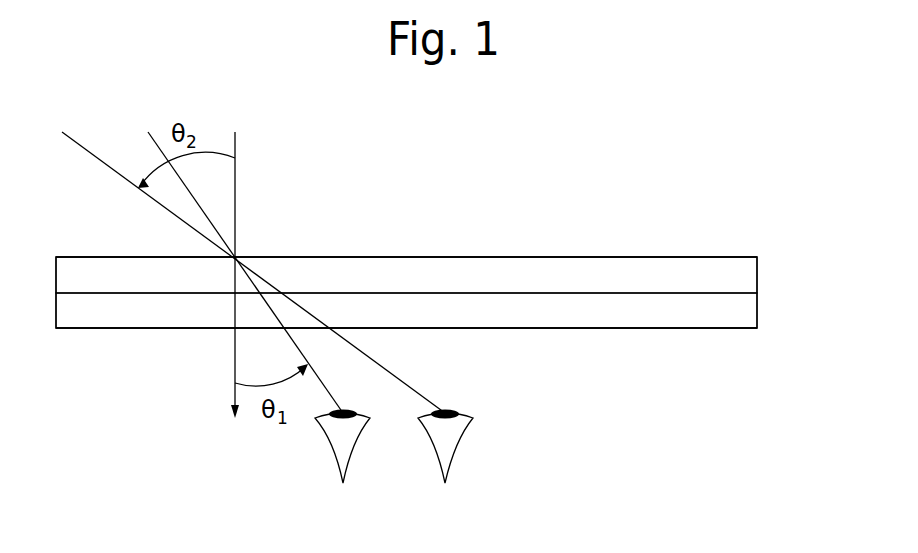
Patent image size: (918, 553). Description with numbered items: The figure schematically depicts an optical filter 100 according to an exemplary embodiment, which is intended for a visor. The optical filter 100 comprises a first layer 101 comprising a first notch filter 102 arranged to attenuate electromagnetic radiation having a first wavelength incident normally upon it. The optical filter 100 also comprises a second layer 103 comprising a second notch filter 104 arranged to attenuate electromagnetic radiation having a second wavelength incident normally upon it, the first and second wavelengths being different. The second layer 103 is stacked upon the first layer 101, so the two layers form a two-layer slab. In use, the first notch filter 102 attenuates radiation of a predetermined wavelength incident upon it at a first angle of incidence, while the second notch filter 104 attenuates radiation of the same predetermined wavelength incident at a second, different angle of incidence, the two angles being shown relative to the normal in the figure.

The optical filter 100 is at (448, 339).
The first layer 101 is at (688, 337).
The first notch filter 102 is at (757, 305).
The second layer 103 is at (686, 251).
The second notch filter 104 is at (757, 276).